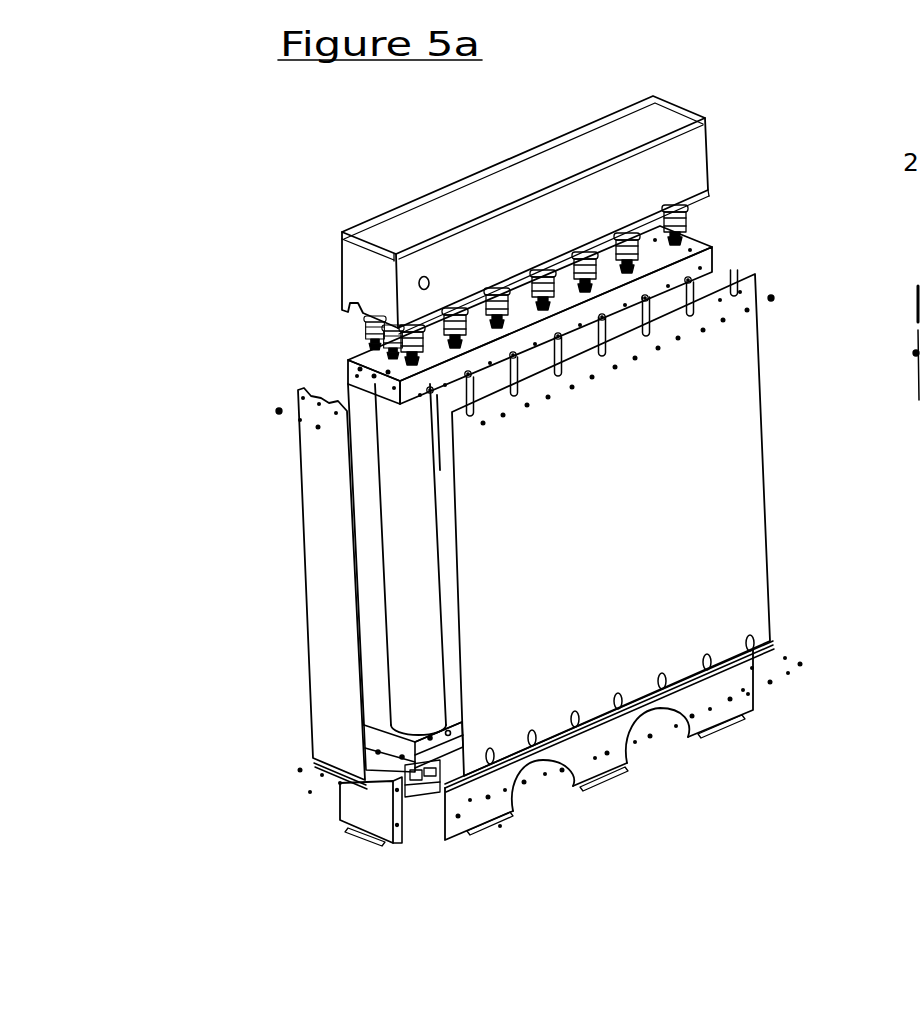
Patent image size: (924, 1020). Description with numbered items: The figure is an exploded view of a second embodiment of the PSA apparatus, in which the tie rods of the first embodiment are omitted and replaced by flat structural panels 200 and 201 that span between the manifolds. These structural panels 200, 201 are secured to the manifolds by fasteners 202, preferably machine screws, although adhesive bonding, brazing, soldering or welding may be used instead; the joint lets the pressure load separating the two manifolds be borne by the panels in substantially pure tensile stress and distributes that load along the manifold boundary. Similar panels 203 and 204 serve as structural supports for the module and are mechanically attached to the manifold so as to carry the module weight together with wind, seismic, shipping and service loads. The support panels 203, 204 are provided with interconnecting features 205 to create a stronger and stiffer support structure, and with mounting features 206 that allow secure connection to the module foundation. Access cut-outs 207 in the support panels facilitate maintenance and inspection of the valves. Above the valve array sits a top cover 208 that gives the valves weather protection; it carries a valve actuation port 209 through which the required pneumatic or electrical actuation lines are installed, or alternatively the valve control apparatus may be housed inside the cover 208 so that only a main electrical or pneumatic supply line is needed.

The structural panel 200 is at (651, 525).
The structural panel 201 is at (282, 591).
The fasteners 202 is at (519, 333).
The support panel 203 is at (766, 676).
The support panel 204 is at (308, 837).
The interconnecting features 205 is at (453, 828).
The mounting features 206 is at (545, 780).
The access cut-outs 207 is at (666, 759).
The top cover 208 is at (588, 210).
The valve actuation port 209 is at (373, 220).